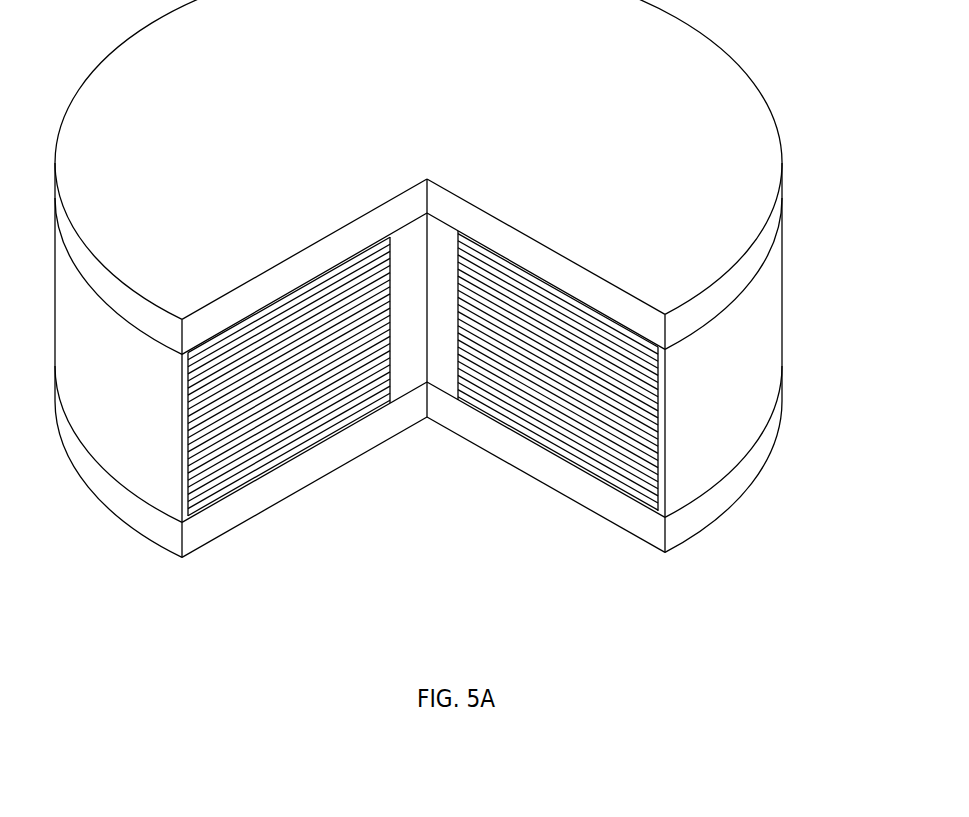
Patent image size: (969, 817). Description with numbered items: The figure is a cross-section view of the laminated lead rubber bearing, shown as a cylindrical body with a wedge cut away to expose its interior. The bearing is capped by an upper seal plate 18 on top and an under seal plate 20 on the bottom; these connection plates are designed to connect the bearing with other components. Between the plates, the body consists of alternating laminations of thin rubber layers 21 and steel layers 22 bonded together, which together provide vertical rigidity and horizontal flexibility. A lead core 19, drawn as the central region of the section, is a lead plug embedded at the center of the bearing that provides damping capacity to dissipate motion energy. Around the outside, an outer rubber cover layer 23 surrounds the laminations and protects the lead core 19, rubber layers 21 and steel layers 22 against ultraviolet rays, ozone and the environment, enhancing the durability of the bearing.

The upper seal plate 18 is at (746, 208).
The lead core 19 is at (396, 239).
The under seal plate 20 is at (752, 466).
The rubber layers 21 is at (320, 256).
The steel layers 22 is at (259, 297).
The outer rubber cover layer 23 is at (152, 438).